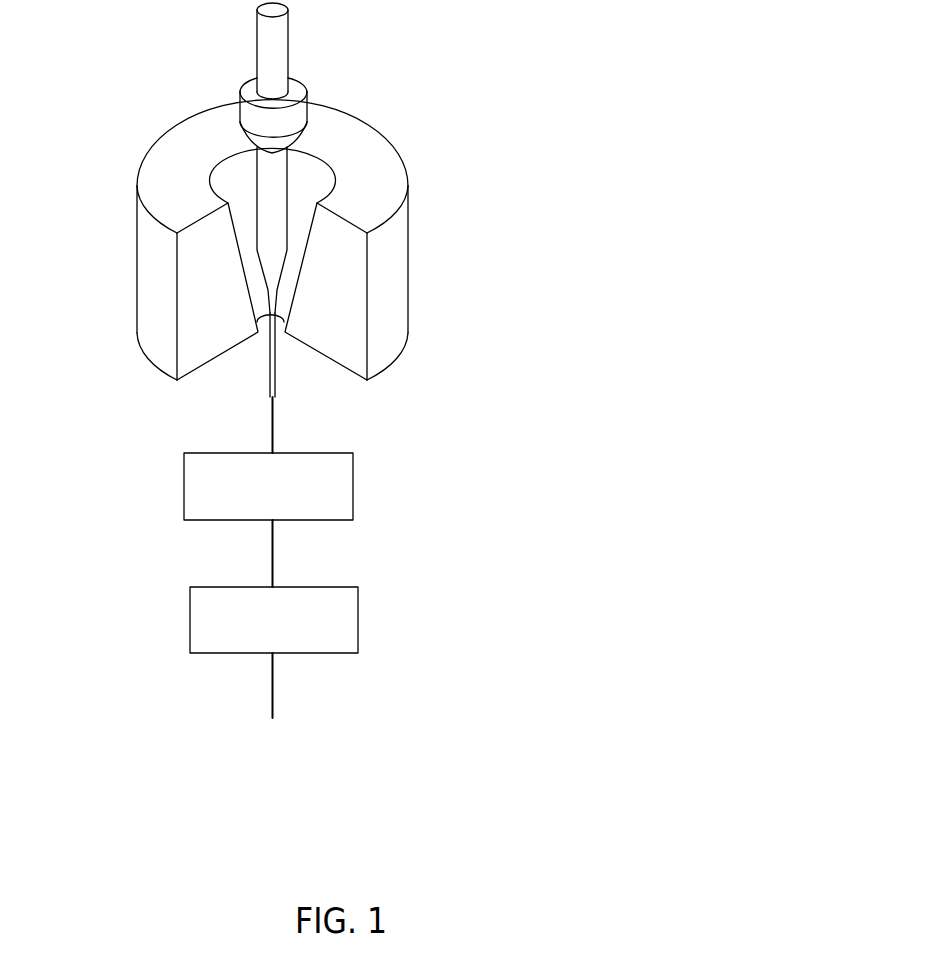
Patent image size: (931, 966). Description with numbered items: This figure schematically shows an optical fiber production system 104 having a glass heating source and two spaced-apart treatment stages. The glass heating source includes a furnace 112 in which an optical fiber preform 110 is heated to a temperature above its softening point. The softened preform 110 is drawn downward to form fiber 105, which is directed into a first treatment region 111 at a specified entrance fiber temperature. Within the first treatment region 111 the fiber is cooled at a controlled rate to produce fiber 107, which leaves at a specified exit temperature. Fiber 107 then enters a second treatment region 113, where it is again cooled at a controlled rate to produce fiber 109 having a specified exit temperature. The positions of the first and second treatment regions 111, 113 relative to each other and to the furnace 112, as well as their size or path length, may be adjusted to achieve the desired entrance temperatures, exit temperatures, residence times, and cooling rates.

The production system 104 is at (585, 98).
The fiber 105 is at (270, 394).
The fiber 107 is at (273, 553).
The fiber 109 is at (273, 675).
The optical fiber preform 110 is at (278, 180).
The first treatment region 111 is at (353, 483).
The furnace 112 is at (408, 187).
The second treatment region 113 is at (358, 619).